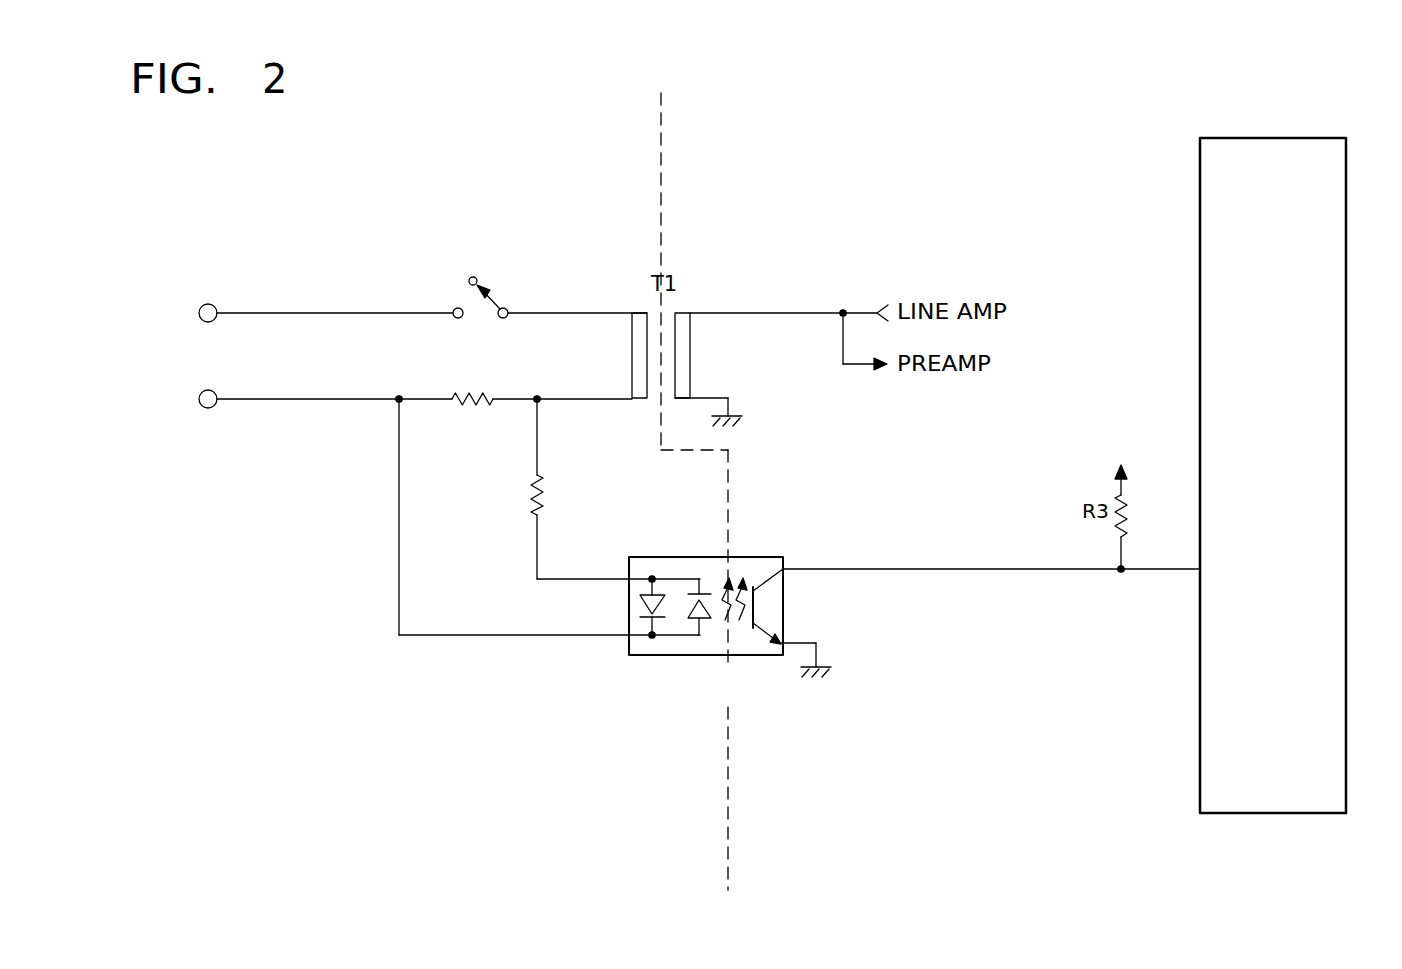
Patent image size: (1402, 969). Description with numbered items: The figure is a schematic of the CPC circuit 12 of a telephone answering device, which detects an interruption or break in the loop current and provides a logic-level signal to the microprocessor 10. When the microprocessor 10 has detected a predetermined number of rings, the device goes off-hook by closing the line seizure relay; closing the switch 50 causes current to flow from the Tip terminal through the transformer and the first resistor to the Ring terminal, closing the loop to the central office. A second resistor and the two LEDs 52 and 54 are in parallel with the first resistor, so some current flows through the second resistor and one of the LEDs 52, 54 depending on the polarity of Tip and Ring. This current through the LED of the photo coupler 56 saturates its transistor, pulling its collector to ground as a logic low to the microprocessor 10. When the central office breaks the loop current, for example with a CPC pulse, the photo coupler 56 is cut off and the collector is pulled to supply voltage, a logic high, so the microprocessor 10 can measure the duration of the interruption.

The microprocessor 10 is at (1200, 311).
The CPC circuit 12 is at (570, 683).
The switch 50 is at (490, 296).
The LED 52 is at (640, 611).
The LED 54 is at (707, 620).
The photo coupler 56 is at (742, 557).